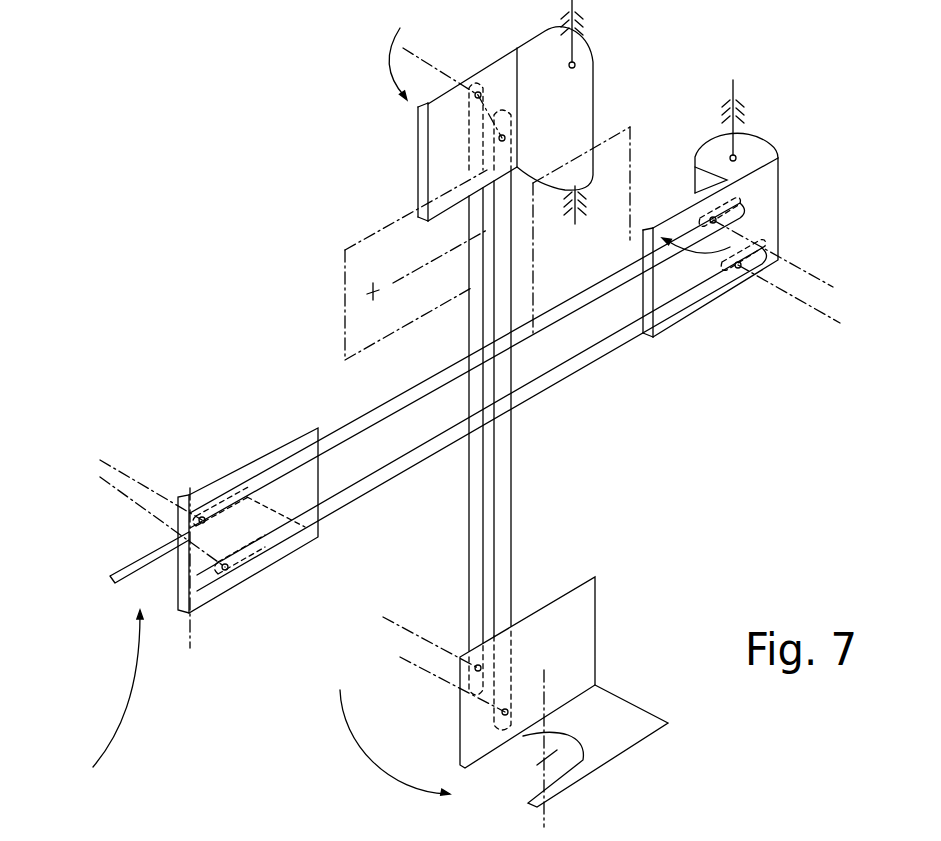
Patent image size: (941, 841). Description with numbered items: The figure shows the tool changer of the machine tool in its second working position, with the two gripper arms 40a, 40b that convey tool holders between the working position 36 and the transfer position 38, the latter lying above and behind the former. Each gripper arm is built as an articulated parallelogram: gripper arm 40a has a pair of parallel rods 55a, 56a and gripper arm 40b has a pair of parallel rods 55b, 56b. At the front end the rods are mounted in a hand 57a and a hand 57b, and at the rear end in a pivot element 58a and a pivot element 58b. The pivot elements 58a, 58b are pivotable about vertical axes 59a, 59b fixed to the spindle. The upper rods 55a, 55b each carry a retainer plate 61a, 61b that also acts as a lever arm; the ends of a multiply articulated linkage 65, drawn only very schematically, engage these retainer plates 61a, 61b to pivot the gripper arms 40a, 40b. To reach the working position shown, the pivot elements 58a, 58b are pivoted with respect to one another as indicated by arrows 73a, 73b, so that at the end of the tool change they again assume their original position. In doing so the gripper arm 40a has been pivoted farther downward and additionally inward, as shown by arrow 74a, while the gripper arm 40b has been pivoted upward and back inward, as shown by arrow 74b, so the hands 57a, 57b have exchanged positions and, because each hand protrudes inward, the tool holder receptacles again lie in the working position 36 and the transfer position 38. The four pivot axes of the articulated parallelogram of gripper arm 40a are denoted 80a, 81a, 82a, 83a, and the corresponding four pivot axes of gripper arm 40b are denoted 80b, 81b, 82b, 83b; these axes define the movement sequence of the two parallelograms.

The working position 36 is at (545, 815).
The transfer position 38 is at (190, 638).
The gripper arm 40a is at (517, 411).
The gripper arm 40b is at (478, 397).
The rod 55a is at (477, 497).
The rod 55b is at (365, 412).
The rod 56a is at (512, 525).
The rod 56b is at (358, 498).
The hand 57a is at (620, 737).
The hand 57b is at (140, 558).
The pivot element 58a is at (575, 100).
The pivot element 58b is at (750, 163).
The axis 59a is at (578, 8).
The axis 59b is at (733, 93).
The retainer plate 61a is at (345, 331).
The retainer plate 61b is at (620, 183).
The linkage 65 is at (408, 270).
The arrow 73a is at (405, 53).
The arrow 73b is at (700, 250).
The arrow 74a is at (375, 775).
The arrow 74b is at (128, 700).
The pivot axis 80a is at (452, 77).
The pivot axis 80b is at (825, 282).
The pivot axis 81a is at (427, 118).
The pivot axis 81b is at (813, 310).
The pivot axis 82a is at (405, 627).
The pivot axis 82b is at (130, 478).
The pivot axis 83a is at (403, 660).
The pivot axis 83b is at (108, 493).